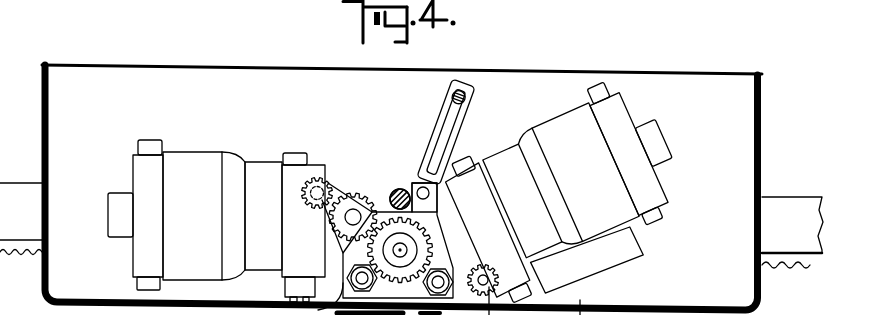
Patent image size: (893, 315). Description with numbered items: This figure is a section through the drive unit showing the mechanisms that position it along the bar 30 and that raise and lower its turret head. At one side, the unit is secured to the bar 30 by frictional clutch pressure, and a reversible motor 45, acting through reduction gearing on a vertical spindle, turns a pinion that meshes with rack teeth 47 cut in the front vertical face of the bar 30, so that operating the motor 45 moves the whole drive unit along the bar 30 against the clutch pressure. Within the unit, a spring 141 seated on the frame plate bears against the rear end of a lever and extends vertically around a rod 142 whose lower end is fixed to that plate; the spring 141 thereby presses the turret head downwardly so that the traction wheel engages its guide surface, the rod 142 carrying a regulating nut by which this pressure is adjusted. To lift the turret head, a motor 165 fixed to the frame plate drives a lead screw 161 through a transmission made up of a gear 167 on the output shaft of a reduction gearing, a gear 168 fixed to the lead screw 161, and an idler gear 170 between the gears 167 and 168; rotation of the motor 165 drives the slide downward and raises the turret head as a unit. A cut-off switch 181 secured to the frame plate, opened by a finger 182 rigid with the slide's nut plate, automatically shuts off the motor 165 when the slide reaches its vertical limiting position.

The bar 30 is at (795, 204).
The reversible motor 45 is at (653, 195).
The rack teeth 47 is at (795, 272).
The spring 141 is at (394, 193).
The rod 142 is at (398, 189).
The lead screw 161 is at (400, 250).
The motor 165 is at (186, 158).
The gear 167 is at (331, 178).
The gear 168 is at (447, 231).
The idler gear 170 is at (352, 192).
The cut-off switch 181 is at (444, 92).
The finger 182 is at (422, 165).